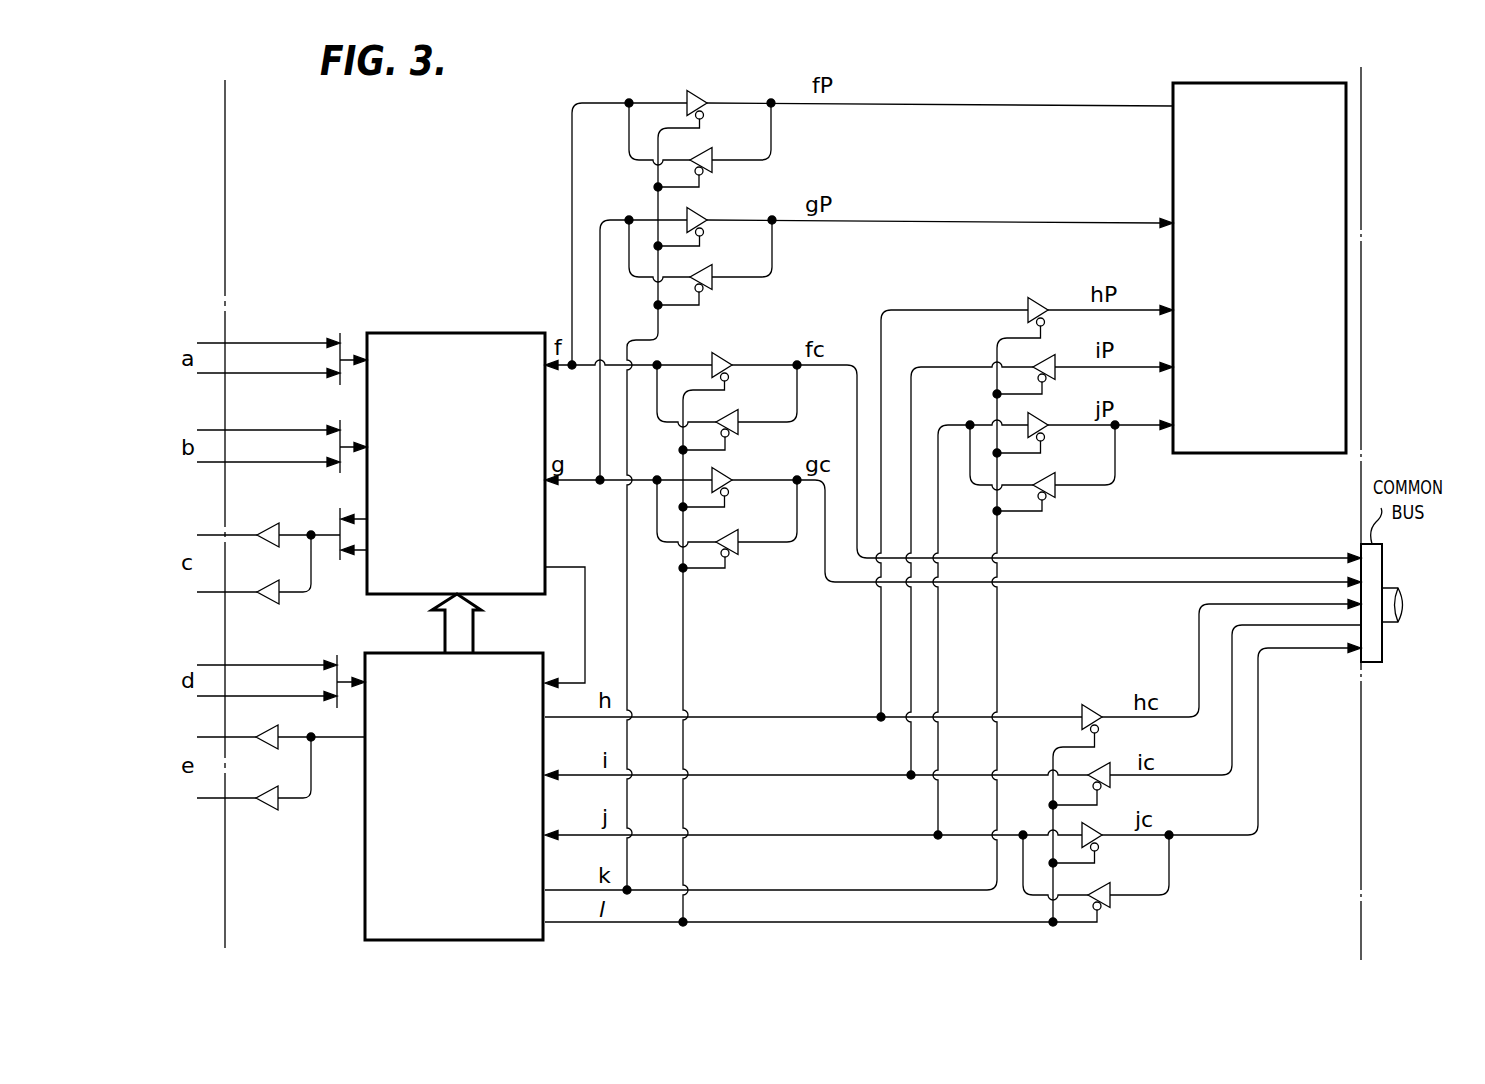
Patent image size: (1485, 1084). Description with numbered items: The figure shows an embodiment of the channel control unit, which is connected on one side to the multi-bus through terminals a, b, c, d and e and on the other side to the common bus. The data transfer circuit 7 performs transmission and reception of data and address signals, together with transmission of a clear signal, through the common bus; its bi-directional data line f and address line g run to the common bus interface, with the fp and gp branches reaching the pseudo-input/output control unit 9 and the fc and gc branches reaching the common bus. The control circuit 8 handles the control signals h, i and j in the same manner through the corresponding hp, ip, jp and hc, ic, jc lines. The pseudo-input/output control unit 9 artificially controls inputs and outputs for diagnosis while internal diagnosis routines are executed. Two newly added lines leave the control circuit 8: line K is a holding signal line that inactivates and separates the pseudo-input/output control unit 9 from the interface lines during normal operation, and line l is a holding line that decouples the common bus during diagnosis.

The data transfer circuit 7 is at (478, 333).
The control circuit 8 is at (515, 653).
The pseudo-input/output control unit 9 is at (1311, 60).